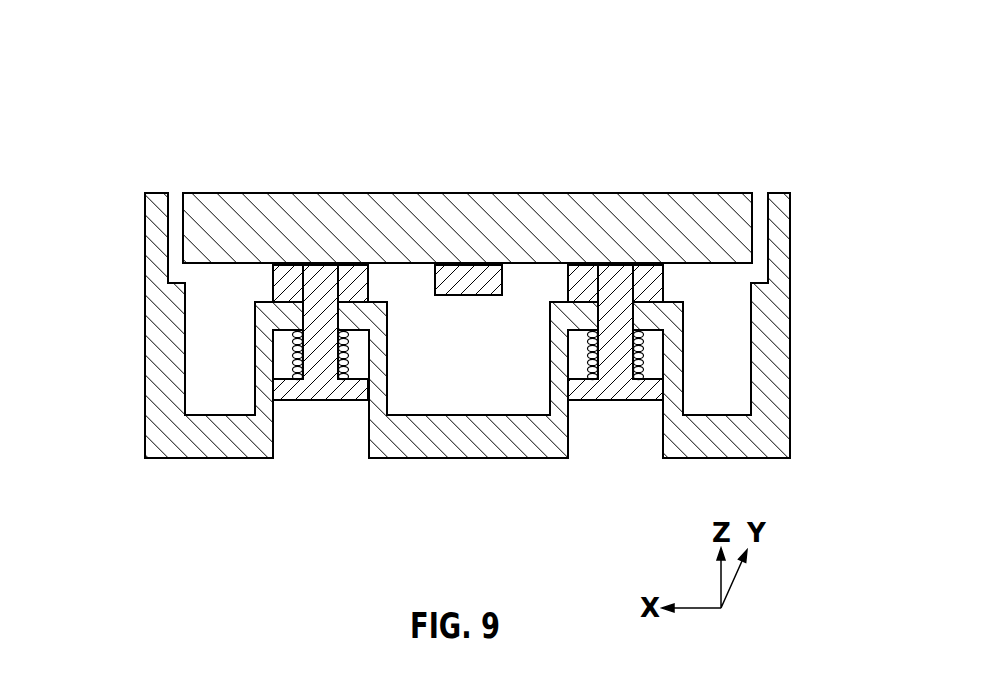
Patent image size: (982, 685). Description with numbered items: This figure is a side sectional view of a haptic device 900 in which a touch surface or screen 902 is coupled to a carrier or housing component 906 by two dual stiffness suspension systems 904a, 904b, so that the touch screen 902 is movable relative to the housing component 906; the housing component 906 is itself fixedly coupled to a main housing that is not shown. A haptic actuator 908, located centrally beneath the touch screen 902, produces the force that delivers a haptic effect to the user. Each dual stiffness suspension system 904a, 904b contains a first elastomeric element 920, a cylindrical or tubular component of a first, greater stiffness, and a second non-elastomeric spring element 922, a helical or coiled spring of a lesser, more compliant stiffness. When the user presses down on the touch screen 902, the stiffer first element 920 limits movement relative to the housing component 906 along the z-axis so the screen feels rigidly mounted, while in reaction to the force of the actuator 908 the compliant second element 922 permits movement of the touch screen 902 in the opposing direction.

The haptic device 900 is at (313, 133).
The touch surface or screen 902 is at (493, 213).
The dual stiffness suspension system 904a is at (266, 279).
The dual stiffness suspension system 904b is at (671, 279).
The carrier or housing component 906 is at (158, 238).
The haptic actuator 908 is at (470, 282).
The first elastomeric element 920 is at (287, 292).
The second non-elastomeric spring element 922 is at (288, 357).